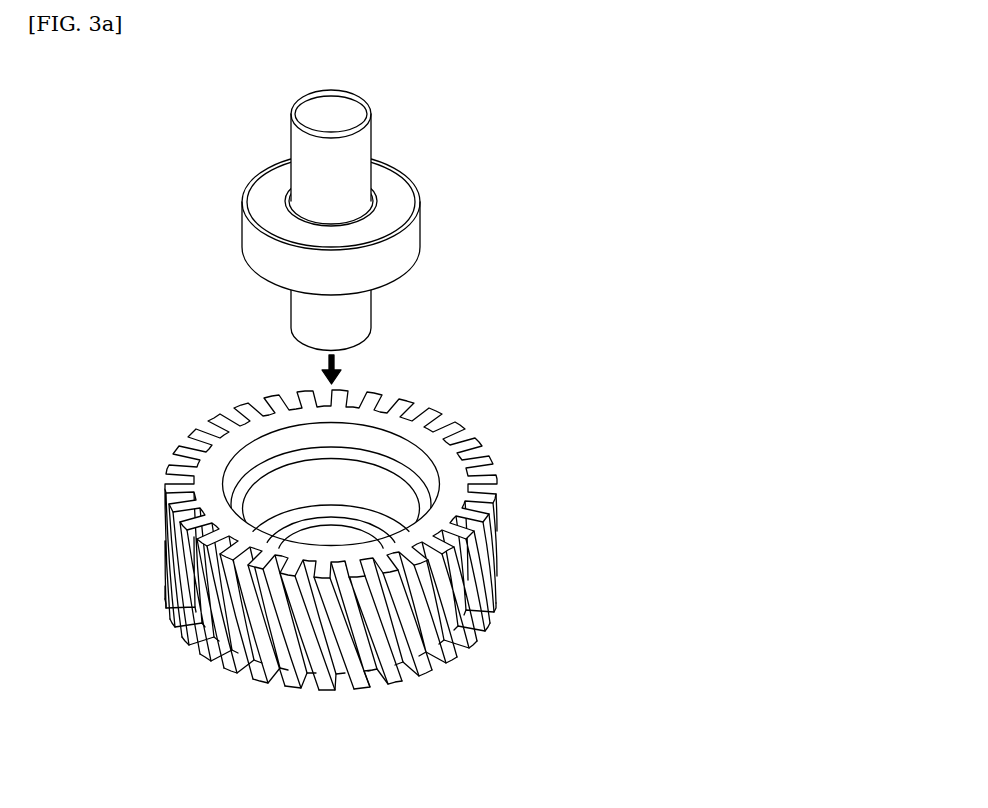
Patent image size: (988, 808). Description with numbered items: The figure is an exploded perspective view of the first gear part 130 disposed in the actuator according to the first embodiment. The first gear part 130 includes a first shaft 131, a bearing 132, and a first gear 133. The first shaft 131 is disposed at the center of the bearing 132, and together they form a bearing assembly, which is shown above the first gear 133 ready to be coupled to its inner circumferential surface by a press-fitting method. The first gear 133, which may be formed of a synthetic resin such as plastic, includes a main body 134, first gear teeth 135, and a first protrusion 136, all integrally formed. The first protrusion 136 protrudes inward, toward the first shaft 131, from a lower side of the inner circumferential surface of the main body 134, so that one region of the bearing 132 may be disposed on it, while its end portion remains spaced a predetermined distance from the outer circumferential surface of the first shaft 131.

The first gear part 130 is at (82, 110).
The first shaft 131 is at (376, 220).
The bearing 132 is at (407, 245).
The first gear 133 is at (427, 517).
The main body 134 is at (365, 417).
The first gear teeth 135 is at (485, 440).
The first protrusion 136 is at (377, 523).